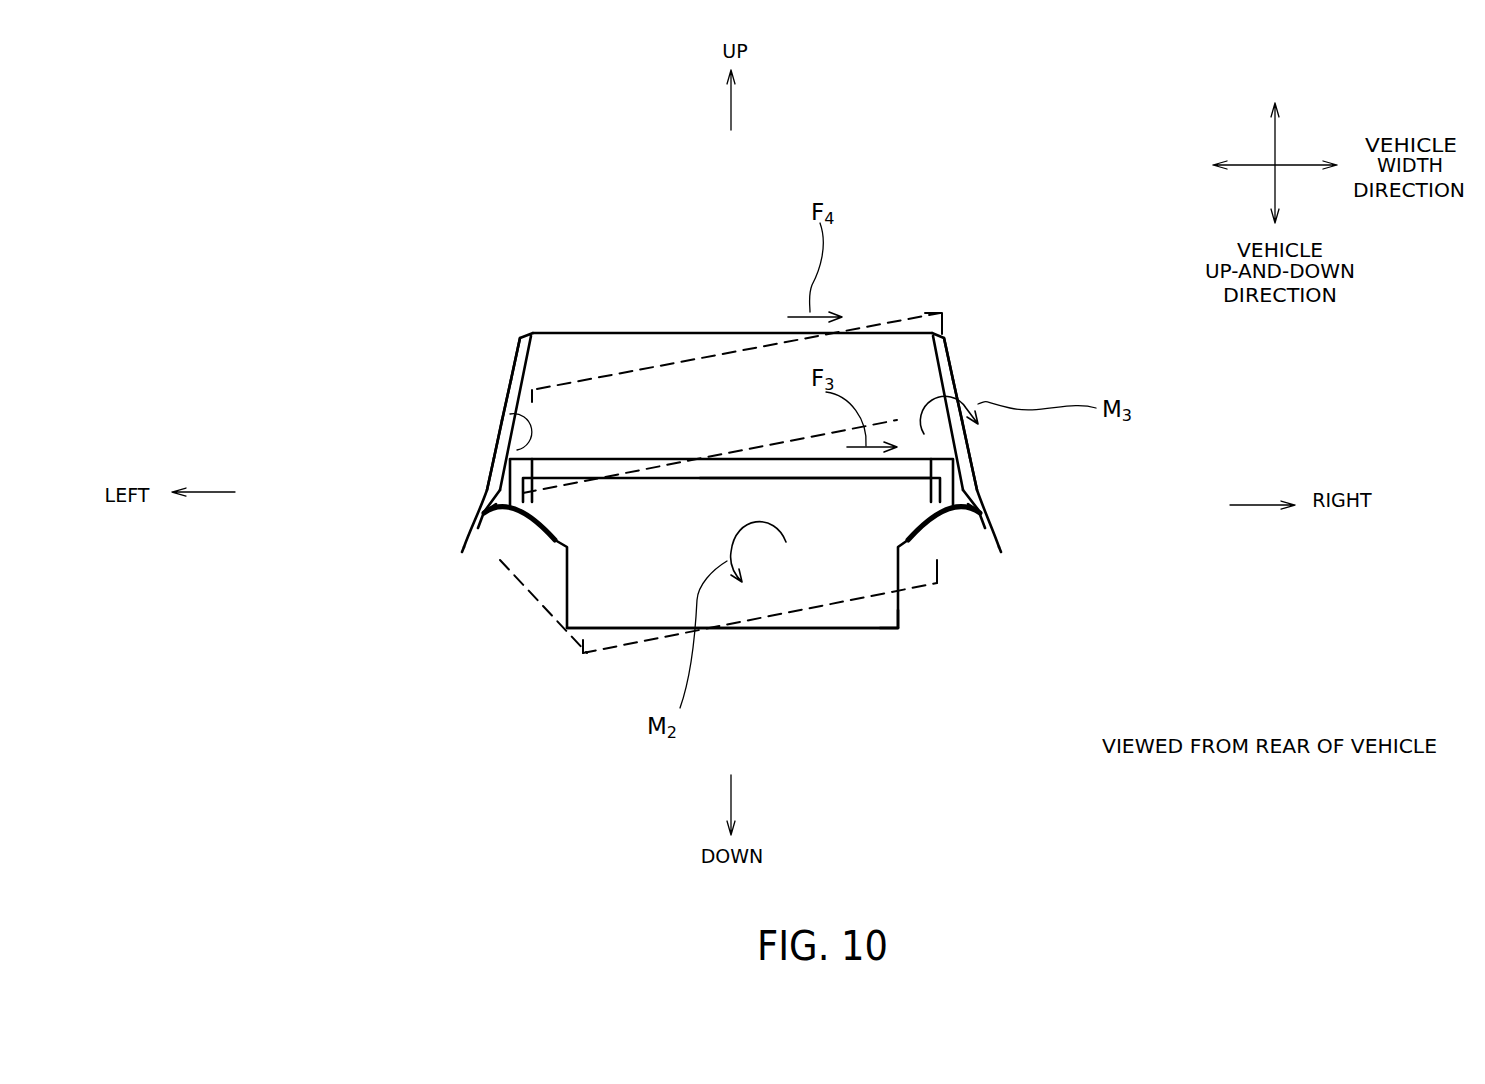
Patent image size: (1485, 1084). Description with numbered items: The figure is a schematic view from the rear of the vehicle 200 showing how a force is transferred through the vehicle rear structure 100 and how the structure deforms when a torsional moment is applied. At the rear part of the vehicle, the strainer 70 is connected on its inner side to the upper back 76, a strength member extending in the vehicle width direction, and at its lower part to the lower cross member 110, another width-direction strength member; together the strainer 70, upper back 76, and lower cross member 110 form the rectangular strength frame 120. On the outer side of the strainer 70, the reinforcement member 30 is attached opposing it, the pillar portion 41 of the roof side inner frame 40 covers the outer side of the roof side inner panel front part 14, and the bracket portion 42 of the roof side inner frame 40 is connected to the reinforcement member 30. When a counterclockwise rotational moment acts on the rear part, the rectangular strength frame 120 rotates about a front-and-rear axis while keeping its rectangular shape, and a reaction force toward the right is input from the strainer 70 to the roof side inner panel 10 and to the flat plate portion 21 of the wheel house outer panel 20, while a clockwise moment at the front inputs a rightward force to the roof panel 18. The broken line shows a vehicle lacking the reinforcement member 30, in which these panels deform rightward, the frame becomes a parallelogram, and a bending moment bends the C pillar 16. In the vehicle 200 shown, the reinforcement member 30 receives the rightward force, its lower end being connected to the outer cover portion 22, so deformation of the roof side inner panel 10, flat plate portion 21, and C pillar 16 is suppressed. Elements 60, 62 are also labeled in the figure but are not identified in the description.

The roof side inner panel 10 is at (505, 413).
The roof side inner panel front part 14 is at (530, 363).
The C pillar 16 is at (495, 369).
The roof panel 18 is at (693, 333).
The wheel house outer panel 20 is at (452, 545).
The flat plate portion 21 is at (490, 530).
The outer cover portion 22 is at (478, 530).
The reinforcement member 30 is at (468, 524).
The roof side inner frame 40 is at (730, 367).
The pillar portion 41 is at (507, 392).
The bracket portion 42 is at (493, 467).
The engagement portion 60 is at (732, 634).
The engagement hook 62 is at (543, 530).
The strainer 70 is at (567, 632).
The upper back 76 is at (812, 480).
The vehicle rear structure 100 is at (1084, 219).
The lower cross member 110 is at (862, 630).
The rectangular strength frame 120 is at (899, 650).
The vehicle 200 is at (377, 144).